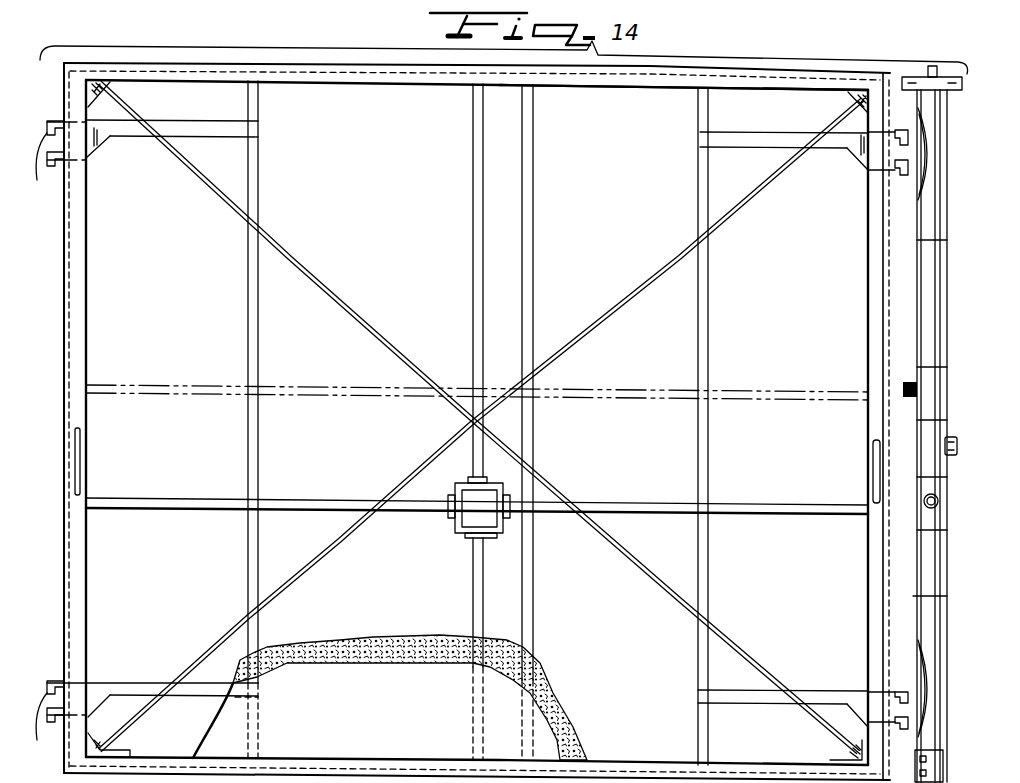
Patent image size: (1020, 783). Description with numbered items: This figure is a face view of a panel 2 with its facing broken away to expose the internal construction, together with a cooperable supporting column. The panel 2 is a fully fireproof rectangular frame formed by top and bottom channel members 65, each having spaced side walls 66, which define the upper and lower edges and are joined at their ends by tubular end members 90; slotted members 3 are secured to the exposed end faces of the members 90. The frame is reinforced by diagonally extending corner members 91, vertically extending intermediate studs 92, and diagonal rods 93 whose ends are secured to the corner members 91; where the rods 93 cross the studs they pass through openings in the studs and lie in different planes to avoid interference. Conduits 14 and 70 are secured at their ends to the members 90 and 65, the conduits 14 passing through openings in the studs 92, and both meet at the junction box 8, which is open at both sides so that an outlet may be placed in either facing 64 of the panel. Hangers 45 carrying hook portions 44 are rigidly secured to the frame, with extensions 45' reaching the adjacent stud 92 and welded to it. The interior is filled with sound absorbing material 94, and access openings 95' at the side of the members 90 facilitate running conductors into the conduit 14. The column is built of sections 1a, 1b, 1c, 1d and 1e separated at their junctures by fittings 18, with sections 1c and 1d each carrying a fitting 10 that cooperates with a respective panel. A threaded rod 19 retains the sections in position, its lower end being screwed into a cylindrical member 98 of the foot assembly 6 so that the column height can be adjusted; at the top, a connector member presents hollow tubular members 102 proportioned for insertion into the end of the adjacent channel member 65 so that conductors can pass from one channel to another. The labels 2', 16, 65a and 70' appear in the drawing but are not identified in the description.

The panel 2 is at (460, 421).
The panel width bracket 2' is at (504, 83).
The member 3 is at (66, 431).
The foot assembly 6 is at (938, 766).
The junction box 8 is at (459, 531).
The fitting 10 is at (905, 388).
The conduit 14 is at (166, 499).
The side channel 16 is at (936, 208).
The fitting 18 is at (858, 556).
The rod 19 is at (923, 179).
The hook portion 44 is at (60, 441).
The hanger 45 is at (457, 392).
The extension 45' is at (477, 436).
The facing 64 is at (376, 627).
The channel member 65 is at (629, 94).
The hidden horizontal member 65a is at (362, 388).
The side wall 66 is at (80, 534).
The passageway 70 is at (455, 280).
The lower central post 70' is at (460, 649).
The tubular end member 90 is at (86, 290).
The corner member 91 is at (852, 755).
The intermediate stud 92 is at (247, 291).
The rod 93 is at (742, 200).
The material 94 is at (333, 637).
The access opening 95' is at (821, 471).
The cylindrical member 98 is at (915, 758).
The hollow tubular member 102 is at (958, 92).
The column section 1a is at (913, 596).
The column section 1b is at (922, 287).
The column section 1c is at (920, 408).
The column section 1d is at (927, 441).
The column section 1e is at (927, 488).